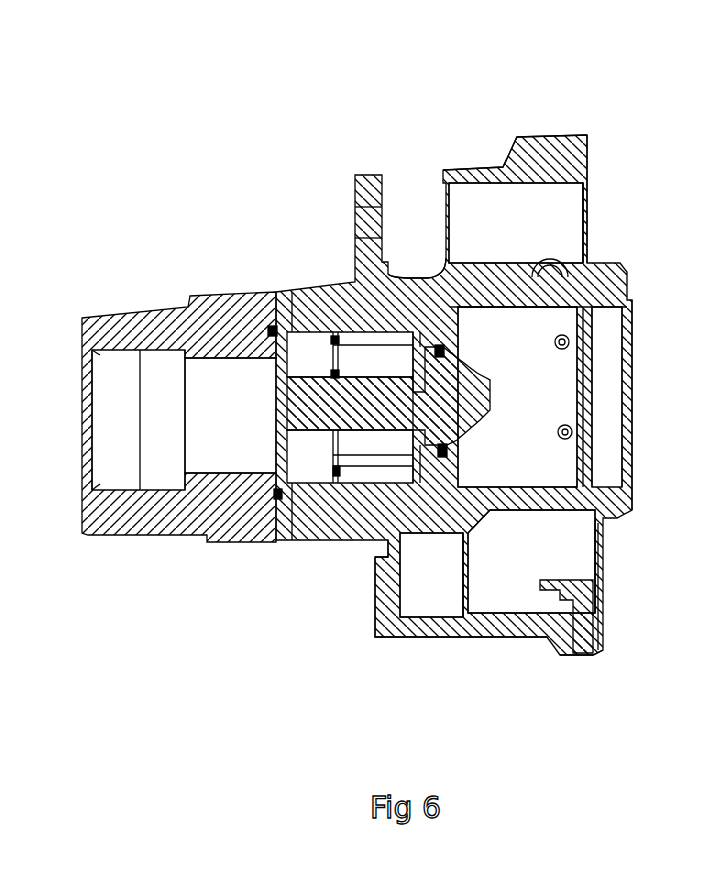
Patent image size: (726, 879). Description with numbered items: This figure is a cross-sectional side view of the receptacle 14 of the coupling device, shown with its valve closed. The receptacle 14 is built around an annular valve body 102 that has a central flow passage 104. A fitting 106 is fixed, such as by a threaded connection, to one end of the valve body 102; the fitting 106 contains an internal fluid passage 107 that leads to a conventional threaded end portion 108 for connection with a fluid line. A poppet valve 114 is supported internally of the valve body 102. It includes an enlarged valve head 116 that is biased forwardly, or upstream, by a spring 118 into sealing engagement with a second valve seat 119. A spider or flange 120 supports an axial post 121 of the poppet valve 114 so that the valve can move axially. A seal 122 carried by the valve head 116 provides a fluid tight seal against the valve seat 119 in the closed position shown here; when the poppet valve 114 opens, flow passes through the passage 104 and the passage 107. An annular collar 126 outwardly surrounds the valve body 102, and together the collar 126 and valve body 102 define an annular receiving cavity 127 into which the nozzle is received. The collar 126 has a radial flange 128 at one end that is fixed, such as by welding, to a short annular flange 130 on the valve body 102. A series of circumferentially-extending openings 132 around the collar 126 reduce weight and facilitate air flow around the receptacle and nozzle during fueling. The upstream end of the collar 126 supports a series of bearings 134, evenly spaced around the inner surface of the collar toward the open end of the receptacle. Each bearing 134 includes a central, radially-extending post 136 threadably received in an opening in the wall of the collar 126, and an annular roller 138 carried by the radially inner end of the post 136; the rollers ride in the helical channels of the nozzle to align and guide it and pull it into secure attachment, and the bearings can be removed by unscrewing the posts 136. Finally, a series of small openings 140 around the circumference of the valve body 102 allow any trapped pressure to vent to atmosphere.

The receptacle 14 is at (357, 108).
The annular valve body 102 is at (340, 288).
The central flow passage 104 is at (390, 362).
The fitting 106 is at (207, 297).
The internal fluid passage 107 is at (245, 420).
The threaded end portion 108 is at (80, 490).
The poppet valve 114 is at (520, 380).
The enlarged valve head 116 is at (478, 428).
The spring 118 is at (367, 457).
The second valve seat 119 is at (418, 300).
The spider or flange 120 is at (302, 483).
The axial post 121 is at (330, 340).
The seal 122 is at (440, 455).
The annular collar 126 is at (512, 160).
The annular receiving cavity 127 is at (580, 196).
The radial flange 128 is at (378, 600).
The short annular flange 130 is at (375, 567).
The circumferentially-extending openings 132 is at (422, 178).
The bearings 134 is at (563, 265).
The radially-extending post 136 is at (600, 650).
The annular roller 138 is at (540, 590).
The small openings 140 is at (608, 285).